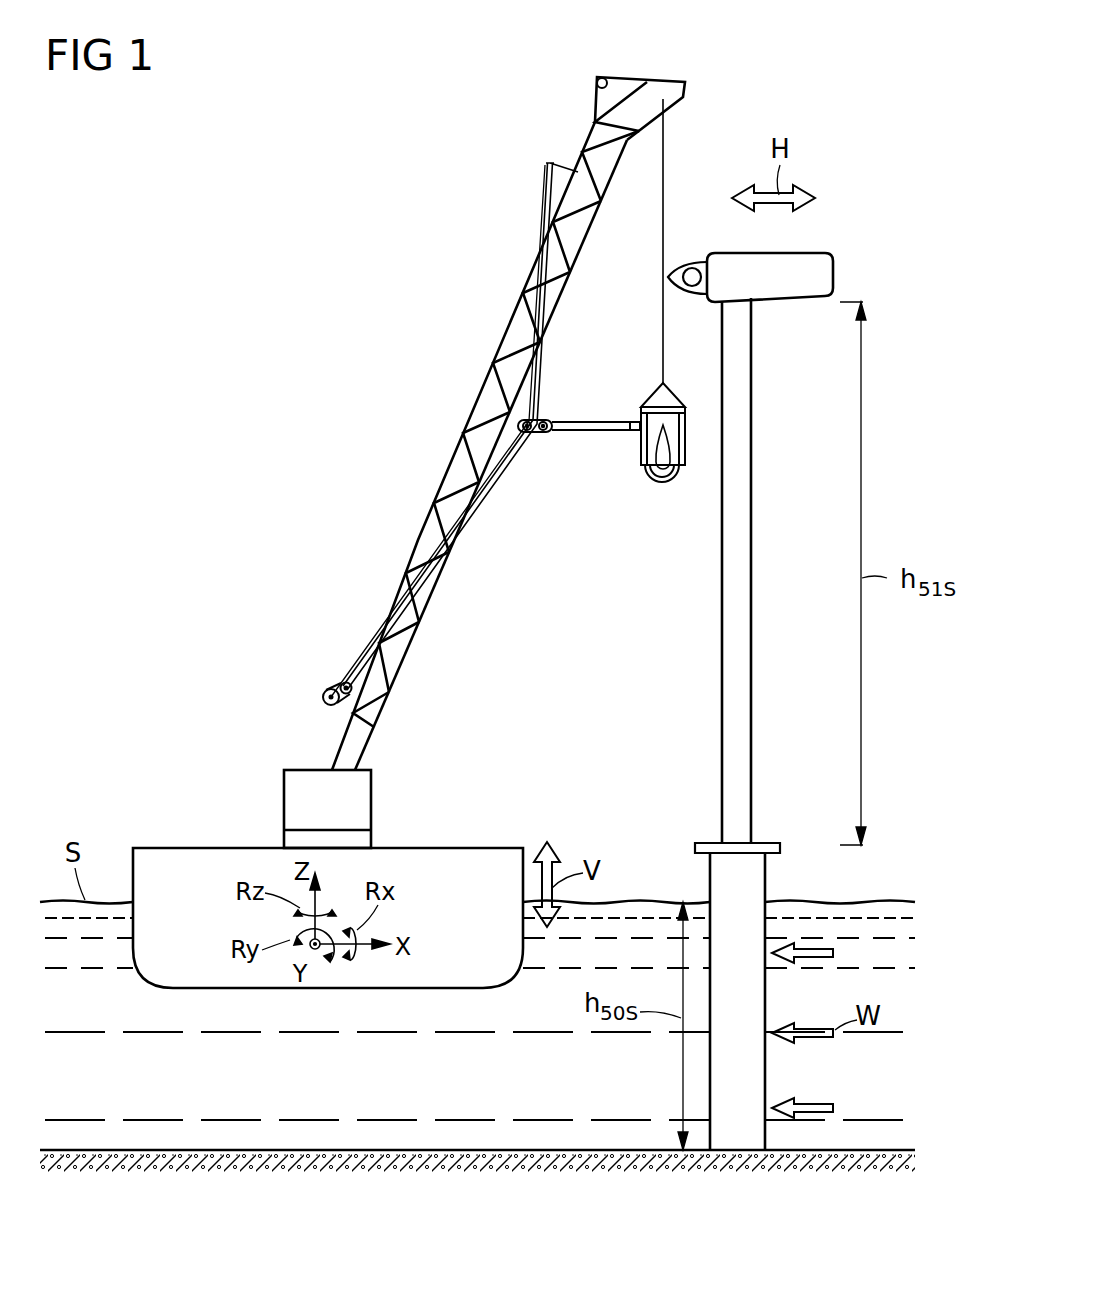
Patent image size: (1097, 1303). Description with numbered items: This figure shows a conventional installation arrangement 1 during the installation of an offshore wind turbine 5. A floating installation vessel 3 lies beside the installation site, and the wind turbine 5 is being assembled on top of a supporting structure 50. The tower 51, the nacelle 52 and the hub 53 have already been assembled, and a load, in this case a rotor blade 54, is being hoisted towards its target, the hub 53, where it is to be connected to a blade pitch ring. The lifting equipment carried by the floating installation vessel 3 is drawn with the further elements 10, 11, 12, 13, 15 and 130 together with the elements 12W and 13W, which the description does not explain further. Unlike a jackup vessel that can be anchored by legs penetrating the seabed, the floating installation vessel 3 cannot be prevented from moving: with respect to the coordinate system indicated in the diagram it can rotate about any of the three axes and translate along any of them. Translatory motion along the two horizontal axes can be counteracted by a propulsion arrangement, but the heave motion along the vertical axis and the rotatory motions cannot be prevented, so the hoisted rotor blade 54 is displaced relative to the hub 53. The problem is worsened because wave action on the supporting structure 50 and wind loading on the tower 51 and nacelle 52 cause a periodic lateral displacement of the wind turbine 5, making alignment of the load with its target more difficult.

The installation arrangement 1 is at (386, 347).
The floating installation vessel 3 is at (158, 846).
The offshore wind turbine 5 is at (783, 381).
The crane boom 10 is at (440, 478).
The boom head 11 is at (663, 95).
The strut 12 is at (553, 302).
The hoist wire 13 is at (540, 272).
The hook block 15 is at (670, 405).
The supporting structure 50 is at (756, 1080).
The tower 51 is at (751, 592).
The nacelle 52 is at (832, 274).
The hub 53 is at (690, 262).
The rotor blade 54 is at (662, 490).
The boom arm 130 is at (535, 418).
The strut winch 12W is at (333, 688).
The wire winch 13W is at (322, 702).